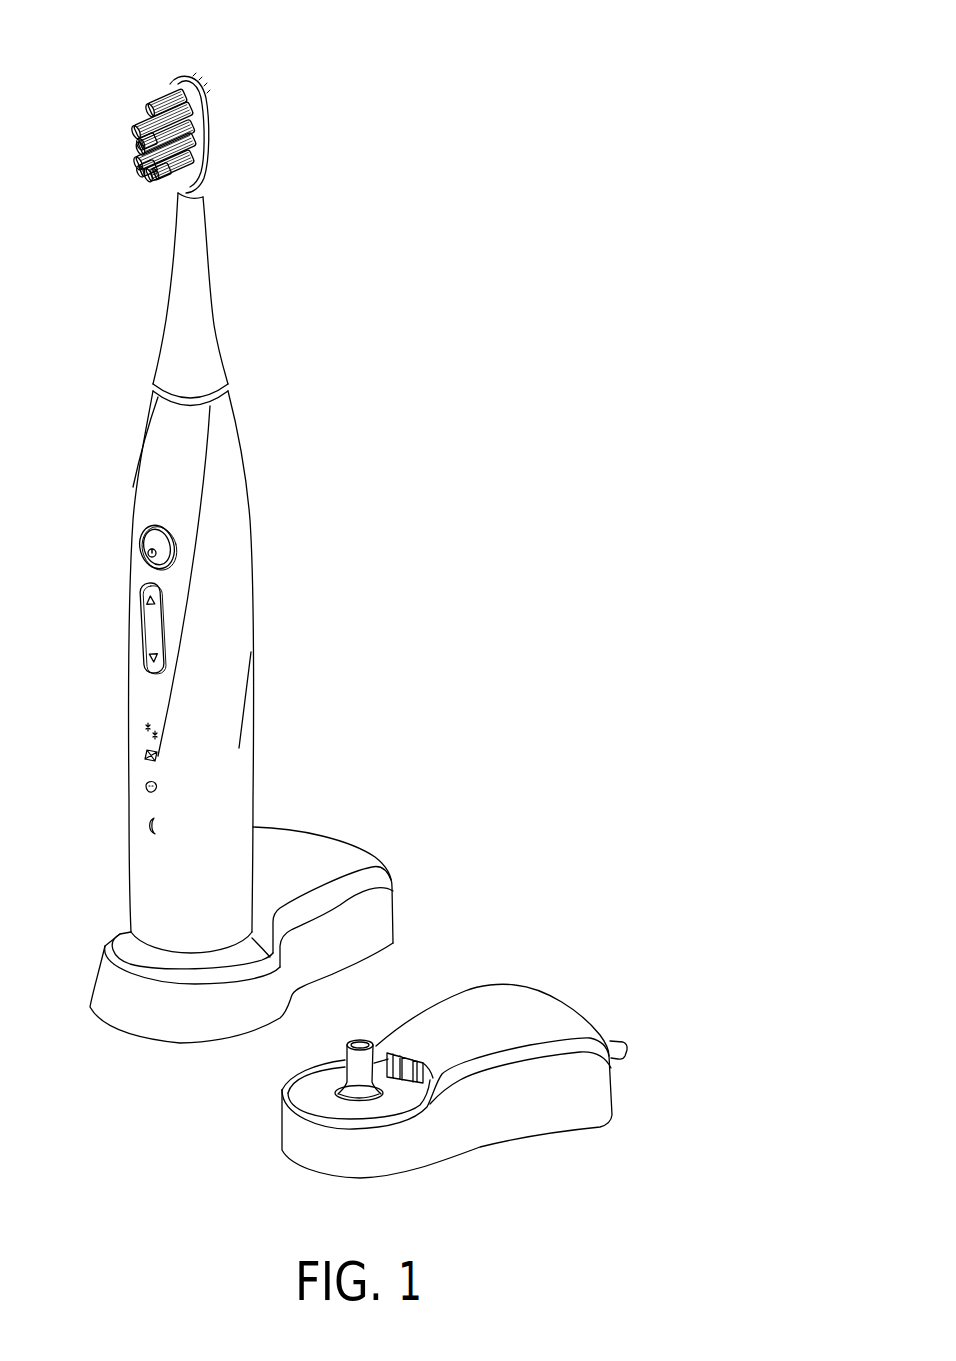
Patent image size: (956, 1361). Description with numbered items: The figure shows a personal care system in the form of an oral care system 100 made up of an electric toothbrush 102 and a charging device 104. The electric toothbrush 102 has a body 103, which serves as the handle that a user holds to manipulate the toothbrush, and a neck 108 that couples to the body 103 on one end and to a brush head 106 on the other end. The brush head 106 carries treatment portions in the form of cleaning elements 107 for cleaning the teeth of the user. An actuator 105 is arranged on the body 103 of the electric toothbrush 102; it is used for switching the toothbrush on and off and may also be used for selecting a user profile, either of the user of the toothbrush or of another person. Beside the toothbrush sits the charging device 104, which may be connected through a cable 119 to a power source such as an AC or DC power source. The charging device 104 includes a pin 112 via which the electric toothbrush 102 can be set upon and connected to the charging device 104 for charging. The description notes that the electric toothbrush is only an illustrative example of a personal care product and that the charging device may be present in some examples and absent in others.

The oral care system 100 is at (517, 144).
The electric toothbrush 102 is at (241, 438).
The body 103 is at (233, 567).
The charging device 104 is at (468, 988).
The actuator 105 is at (150, 546).
The brush head 106 is at (207, 117).
The cleaning elements 107 is at (140, 124).
The neck 108 is at (192, 292).
The pin 112 is at (354, 1063).
The cable 119 is at (616, 1040).